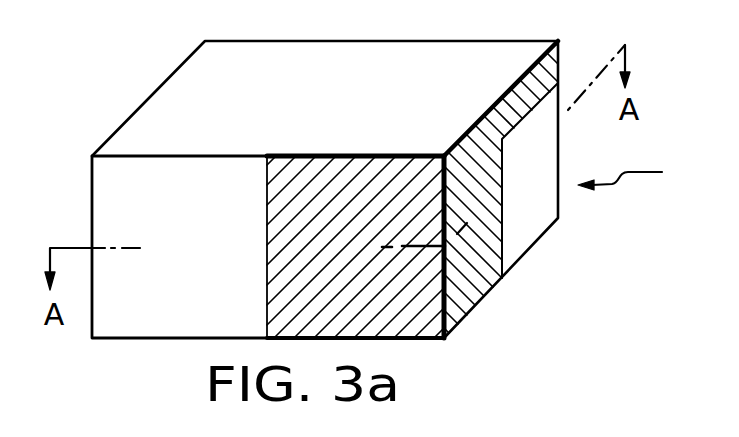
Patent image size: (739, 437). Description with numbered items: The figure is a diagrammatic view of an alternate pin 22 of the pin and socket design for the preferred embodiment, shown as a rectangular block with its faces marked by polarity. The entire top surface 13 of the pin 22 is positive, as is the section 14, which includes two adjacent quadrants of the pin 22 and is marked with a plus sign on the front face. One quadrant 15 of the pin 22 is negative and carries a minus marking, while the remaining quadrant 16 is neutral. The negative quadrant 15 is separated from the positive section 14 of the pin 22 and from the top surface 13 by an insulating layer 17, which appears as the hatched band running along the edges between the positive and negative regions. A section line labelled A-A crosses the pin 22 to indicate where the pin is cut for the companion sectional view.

The top surface 13 is at (150, 108).
The section 14 is at (122, 213).
The negative quadrant 15 is at (529, 229).
The neutral quadrant 16 is at (472, 283).
The insulating layer 17 is at (347, 153).
The pin 22 is at (634, 173).